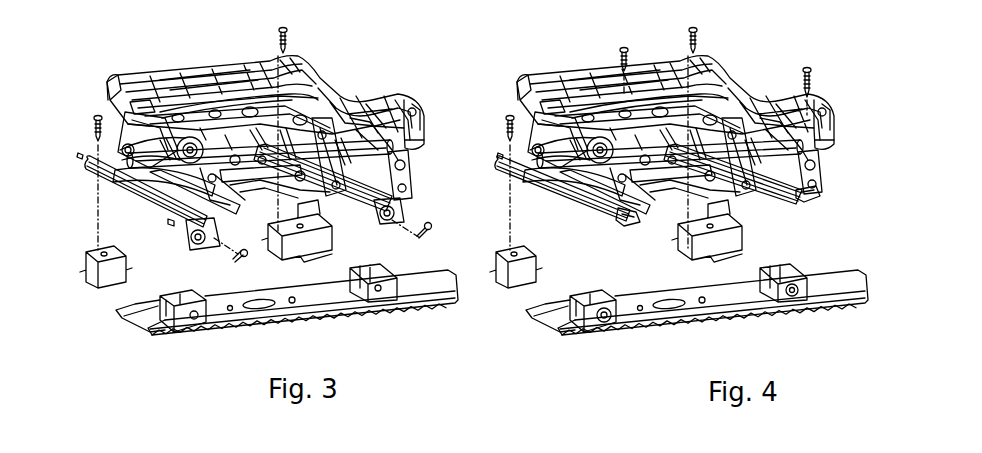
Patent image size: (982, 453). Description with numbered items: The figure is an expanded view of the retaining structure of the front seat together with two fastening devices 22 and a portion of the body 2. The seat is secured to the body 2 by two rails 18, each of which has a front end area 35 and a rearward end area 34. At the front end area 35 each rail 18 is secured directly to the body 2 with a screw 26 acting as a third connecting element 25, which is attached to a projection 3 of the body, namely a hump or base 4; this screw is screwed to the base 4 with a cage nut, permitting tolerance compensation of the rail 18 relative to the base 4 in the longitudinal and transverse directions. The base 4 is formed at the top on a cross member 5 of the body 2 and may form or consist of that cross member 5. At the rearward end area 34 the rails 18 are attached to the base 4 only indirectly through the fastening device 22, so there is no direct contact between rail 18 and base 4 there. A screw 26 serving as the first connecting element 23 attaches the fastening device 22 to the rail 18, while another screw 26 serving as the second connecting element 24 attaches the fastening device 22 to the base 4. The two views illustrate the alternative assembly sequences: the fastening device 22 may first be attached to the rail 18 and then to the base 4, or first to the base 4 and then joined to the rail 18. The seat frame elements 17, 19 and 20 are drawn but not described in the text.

In FIG. 3, the body 2 is at (250, 292).
In FIG. 4, the body 2 is at (679, 280).
In FIG. 3, the projection 3 is at (88, 252).
In FIG. 4, the projection 3 is at (641, 244).
In FIG. 3, the base 4 is at (165, 325).
In FIG. 4, the base 4 is at (655, 309).
In FIG. 3, the cross member 5 is at (305, 322).
In FIG. 4, the cross member 5 is at (697, 315).
In FIG. 3, the seat frame assembly 17 is at (412, 172).
In FIG. 4, the seat frame assembly 17 is at (661, 202).
In FIG. 3, the rail 18 is at (88, 170).
In FIG. 4, the rail 18 is at (621, 182).
In FIG. 3, the connecting link / lever 19 is at (282, 192).
In FIG. 4, the connecting link / lever 19 is at (669, 166).
In FIG. 3, the seat cushion frame 20 is at (306, 70).
In FIG. 4, the seat cushion frame 20 is at (675, 90).
In FIG. 3, the fastening device 22 is at (190, 236).
In FIG. 4, the fastening device 22 is at (721, 329).
In FIG. 4, the first connecting element 23 is at (716, 72).
In FIG. 3, the second connecting element 24 is at (236, 258).
In FIG. 3, the third connecting element 25 is at (280, 30).
In FIG. 4, the third connecting element 25 is at (568, 129).
In FIG. 3, the screw 26 is at (231, 148).
In FIG. 4, the screw 26 is at (662, 129).
In FIG. 3, the rearward end area 34 is at (168, 222).
In FIG. 4, the rearward end area 34 is at (735, 213).
In FIG. 3, the front end area 35 is at (78, 153).
In FIG. 4, the front end area 35 is at (493, 139).